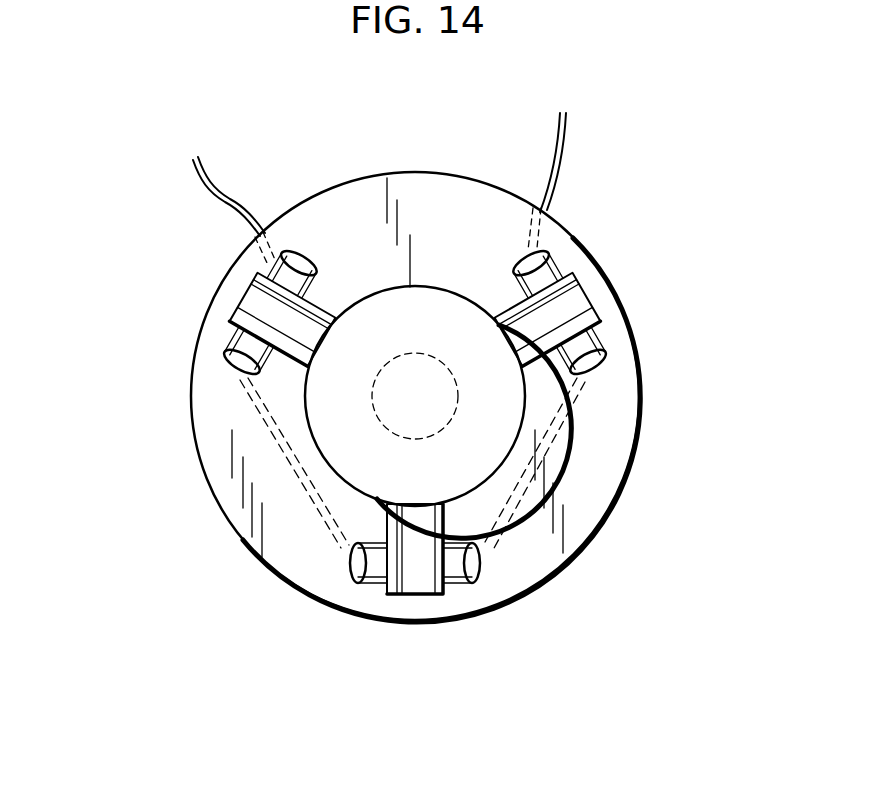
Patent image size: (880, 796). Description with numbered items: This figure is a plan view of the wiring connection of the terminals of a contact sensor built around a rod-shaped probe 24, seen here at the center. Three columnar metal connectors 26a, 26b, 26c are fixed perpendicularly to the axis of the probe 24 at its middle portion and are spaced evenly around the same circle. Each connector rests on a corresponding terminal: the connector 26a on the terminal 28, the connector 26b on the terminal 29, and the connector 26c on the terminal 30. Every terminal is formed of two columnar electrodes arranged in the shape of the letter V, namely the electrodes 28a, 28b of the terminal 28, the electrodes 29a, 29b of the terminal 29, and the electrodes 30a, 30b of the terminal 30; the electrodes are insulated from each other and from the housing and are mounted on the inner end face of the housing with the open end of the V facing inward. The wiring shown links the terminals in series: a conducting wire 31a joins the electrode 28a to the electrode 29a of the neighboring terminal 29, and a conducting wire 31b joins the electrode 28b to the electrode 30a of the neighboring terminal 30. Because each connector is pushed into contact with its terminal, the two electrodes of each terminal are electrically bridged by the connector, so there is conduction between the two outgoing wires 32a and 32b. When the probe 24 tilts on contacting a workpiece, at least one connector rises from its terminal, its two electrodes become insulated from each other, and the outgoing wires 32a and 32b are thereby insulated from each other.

The probe 24 is at (432, 413).
The connector 26a is at (430, 532).
The connector 26b is at (536, 345).
The connector 26c is at (292, 350).
The terminal 28 is at (497, 708).
The columnar electrode 28a is at (372, 588).
The columnar electrode 28b is at (455, 588).
The terminal 29 is at (87, 204).
The columnar electrode 29a is at (252, 330).
The columnar electrode 29b is at (272, 266).
The terminal 30 is at (696, 200).
The columnar electrode 30a is at (582, 340).
The columnar electrode 30b is at (555, 272).
The conducting wire 31a is at (290, 459).
The conducting wire 31b is at (523, 492).
The outgoing wire 32a is at (210, 182).
The outgoing wire 32b is at (566, 152).